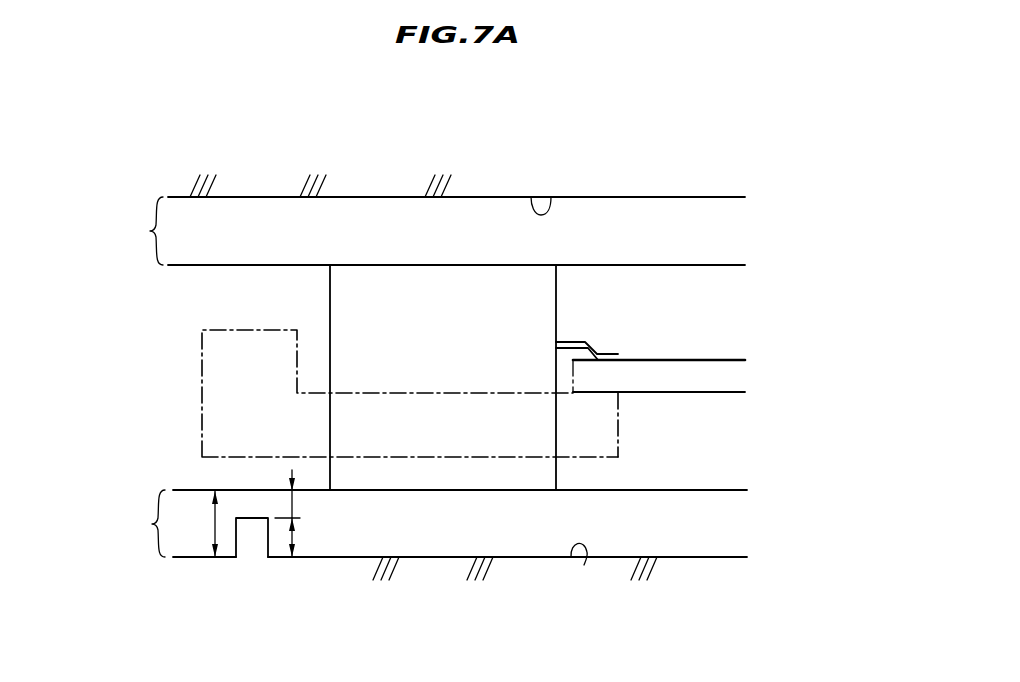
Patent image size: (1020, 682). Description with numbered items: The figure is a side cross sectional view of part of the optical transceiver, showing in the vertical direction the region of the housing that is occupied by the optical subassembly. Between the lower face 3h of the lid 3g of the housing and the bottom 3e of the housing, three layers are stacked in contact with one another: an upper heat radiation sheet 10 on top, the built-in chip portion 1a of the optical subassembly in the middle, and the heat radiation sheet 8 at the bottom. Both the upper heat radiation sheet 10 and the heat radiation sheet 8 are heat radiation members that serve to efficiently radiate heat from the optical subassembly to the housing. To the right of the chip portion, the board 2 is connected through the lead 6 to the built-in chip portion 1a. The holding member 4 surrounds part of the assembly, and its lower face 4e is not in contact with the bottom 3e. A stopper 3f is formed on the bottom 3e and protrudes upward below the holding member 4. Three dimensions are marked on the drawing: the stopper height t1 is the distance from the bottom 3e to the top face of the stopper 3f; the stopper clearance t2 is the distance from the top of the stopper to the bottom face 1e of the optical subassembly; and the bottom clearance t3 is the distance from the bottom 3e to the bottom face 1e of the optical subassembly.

The upper heat radiation sheet 10 is at (394, 220).
The lid 3g is at (370, 138).
The built-in chip portion 1a is at (411, 276).
The lower face 3h is at (551, 197).
The lead 6 is at (598, 345).
The board 2 is at (676, 368).
The holding member 4 is at (230, 373).
The lower face 4e is at (618, 458).
The heat radiation sheet 8 is at (391, 519).
The stopper 3f is at (250, 517).
The bottom clearance t3 is at (215, 527).
The stopper clearance t2 is at (297, 501).
The stopper height t1 is at (294, 537).
The bottom face 1e is at (468, 490).
The bottom 3e is at (584, 565).